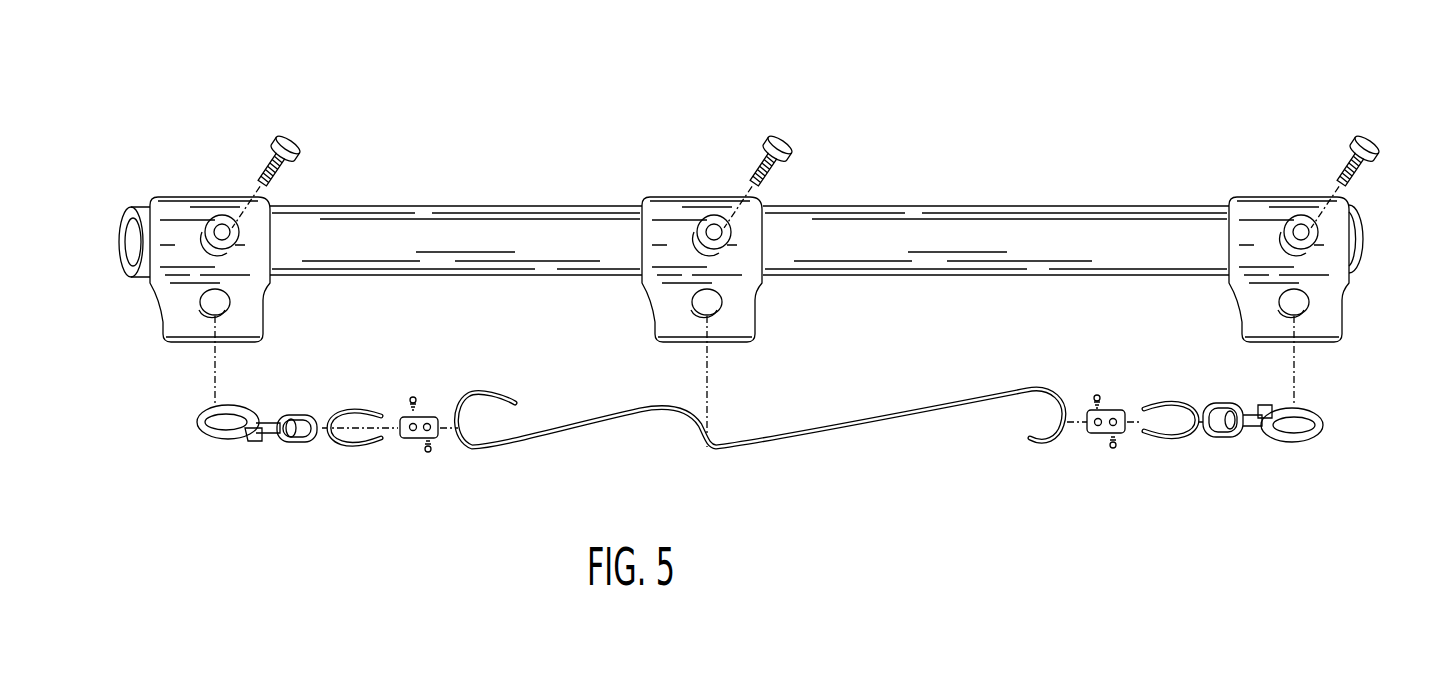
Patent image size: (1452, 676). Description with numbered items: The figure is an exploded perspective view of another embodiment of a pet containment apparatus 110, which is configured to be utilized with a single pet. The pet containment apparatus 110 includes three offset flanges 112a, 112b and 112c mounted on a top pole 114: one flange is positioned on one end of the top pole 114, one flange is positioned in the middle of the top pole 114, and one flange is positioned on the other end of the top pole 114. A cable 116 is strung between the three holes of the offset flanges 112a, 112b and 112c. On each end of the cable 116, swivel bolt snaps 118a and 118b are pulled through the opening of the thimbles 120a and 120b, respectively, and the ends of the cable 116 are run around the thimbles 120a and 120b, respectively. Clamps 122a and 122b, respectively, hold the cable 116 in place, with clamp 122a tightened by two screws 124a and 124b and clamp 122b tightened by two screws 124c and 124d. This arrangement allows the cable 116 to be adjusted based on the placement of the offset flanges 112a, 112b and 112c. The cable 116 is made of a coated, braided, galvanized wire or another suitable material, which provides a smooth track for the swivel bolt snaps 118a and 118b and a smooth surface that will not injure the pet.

The pet containment apparatus 110 is at (929, 149).
The offset flange 112a is at (1333, 247).
The offset flange 112b is at (680, 220).
The offset flange 112c is at (190, 220).
The top pole 114 is at (898, 238).
The cable 116 is at (577, 422).
The swivel bolt snap 118a is at (1292, 442).
The swivel bolt snap 118b is at (255, 440).
The thimble 120a is at (1173, 433).
The thimble 120b is at (337, 443).
The clamp 122a is at (1092, 433).
The clamp 122b is at (403, 440).
The screw 124a is at (1113, 450).
The screw 124b is at (1100, 395).
The screw 124c is at (428, 452).
The screw 124d is at (413, 398).